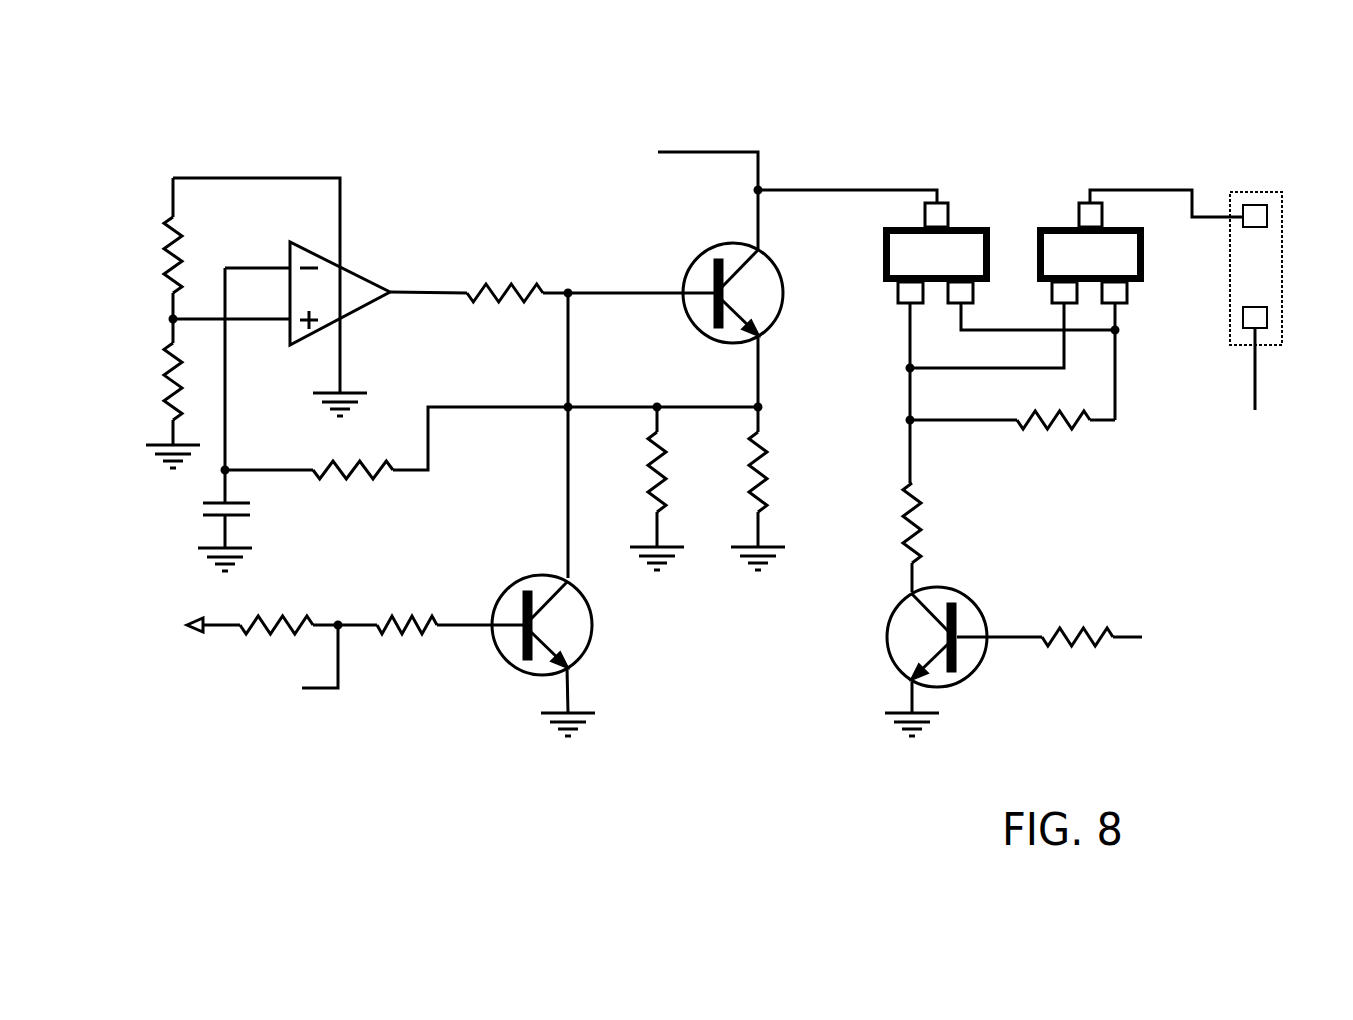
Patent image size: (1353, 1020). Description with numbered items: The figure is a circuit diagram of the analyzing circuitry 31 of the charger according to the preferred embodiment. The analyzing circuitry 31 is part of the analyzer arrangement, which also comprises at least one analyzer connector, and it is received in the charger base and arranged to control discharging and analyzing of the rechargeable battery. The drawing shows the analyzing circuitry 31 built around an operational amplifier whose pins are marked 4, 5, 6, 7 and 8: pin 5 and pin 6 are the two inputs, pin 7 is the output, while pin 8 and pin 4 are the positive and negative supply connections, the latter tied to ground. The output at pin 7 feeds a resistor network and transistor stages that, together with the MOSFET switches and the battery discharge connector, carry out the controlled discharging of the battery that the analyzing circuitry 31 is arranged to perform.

The analyzing circuitry 31 is at (417, 172).
The op-amp negative supply pin 4 is at (340, 380).
The op-amp non-inverting input pin 5 is at (231, 308).
The op-amp inverting input pin 6 is at (257, 256).
The op-amp output pin 7 is at (428, 281).
The op-amp positive supply pin 8 is at (261, 210).